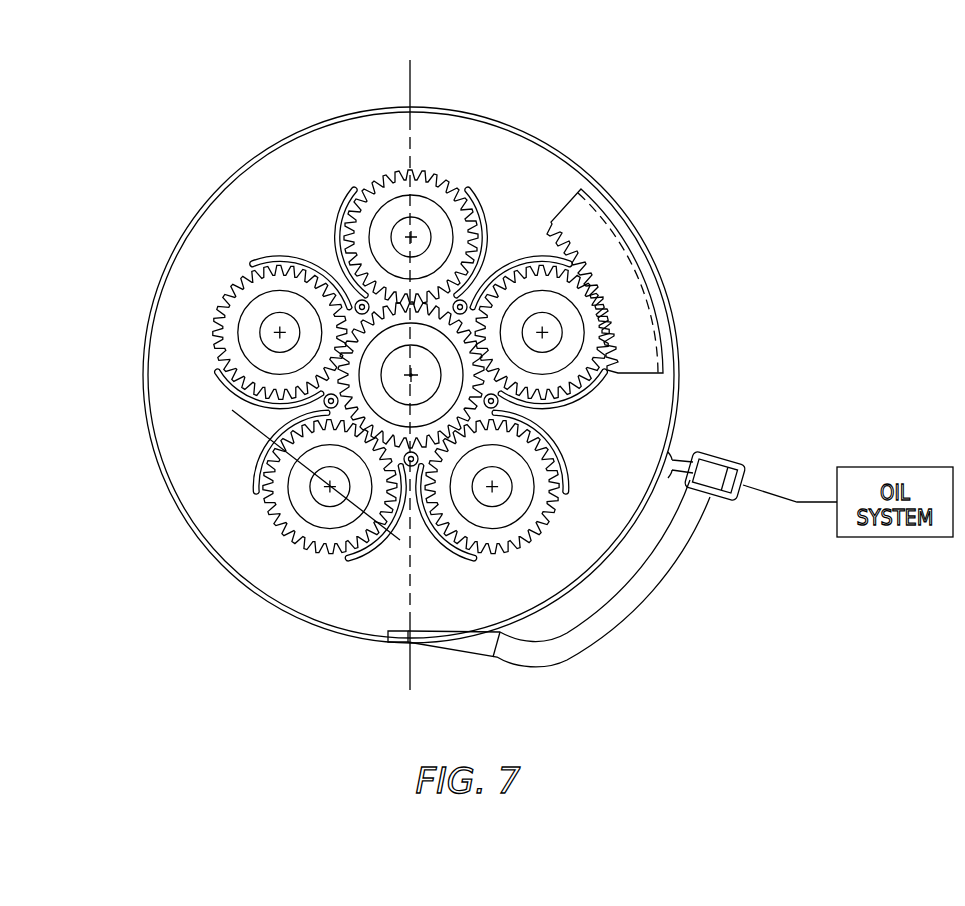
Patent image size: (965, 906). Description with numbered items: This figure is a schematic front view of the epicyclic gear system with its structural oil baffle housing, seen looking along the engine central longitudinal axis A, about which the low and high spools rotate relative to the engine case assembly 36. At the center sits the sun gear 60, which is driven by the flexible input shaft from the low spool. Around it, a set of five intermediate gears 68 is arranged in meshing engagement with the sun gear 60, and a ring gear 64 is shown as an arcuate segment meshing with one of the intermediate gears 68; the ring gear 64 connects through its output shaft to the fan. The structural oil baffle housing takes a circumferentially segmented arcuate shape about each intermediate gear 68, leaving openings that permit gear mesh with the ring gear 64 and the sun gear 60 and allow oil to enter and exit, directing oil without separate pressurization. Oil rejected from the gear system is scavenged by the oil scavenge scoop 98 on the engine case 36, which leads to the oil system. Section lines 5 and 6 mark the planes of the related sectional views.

The engine case assembly 36 is at (552, 138).
The sun gear 60 is at (388, 368).
The intermediate gears 68 is at (425, 213).
The ring gear 64 is at (605, 233).
The oil scavenge scoop 98 is at (480, 661).
The section line 6- 6 is at (396, 545).
The section line 5- 5 is at (455, 690).
The engine central longitudinal axis A is at (412, 373).